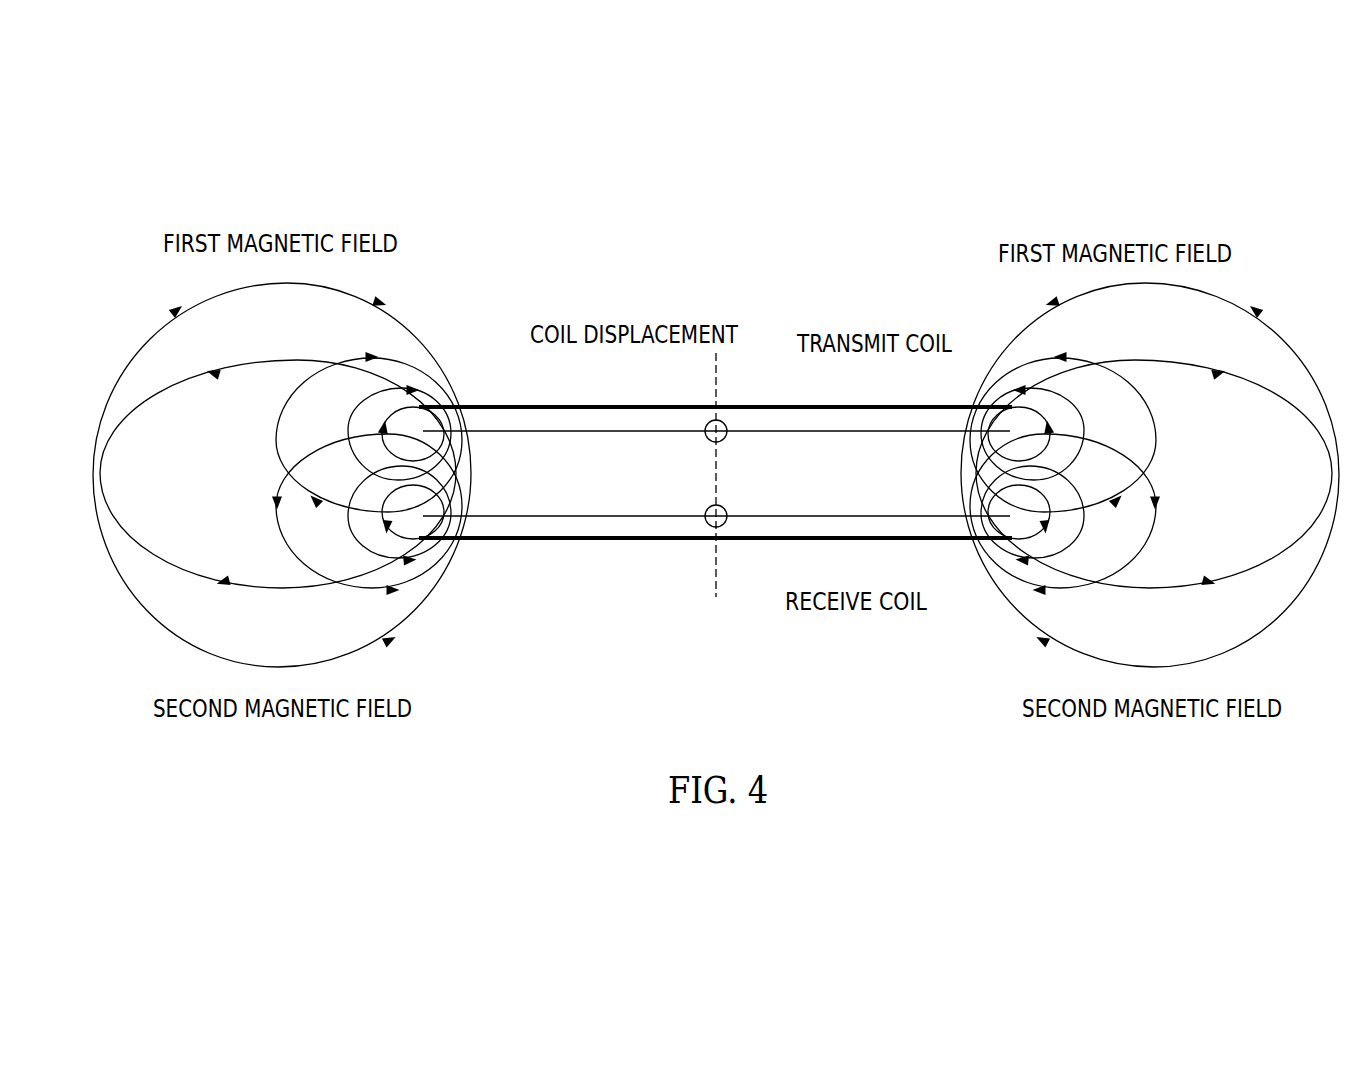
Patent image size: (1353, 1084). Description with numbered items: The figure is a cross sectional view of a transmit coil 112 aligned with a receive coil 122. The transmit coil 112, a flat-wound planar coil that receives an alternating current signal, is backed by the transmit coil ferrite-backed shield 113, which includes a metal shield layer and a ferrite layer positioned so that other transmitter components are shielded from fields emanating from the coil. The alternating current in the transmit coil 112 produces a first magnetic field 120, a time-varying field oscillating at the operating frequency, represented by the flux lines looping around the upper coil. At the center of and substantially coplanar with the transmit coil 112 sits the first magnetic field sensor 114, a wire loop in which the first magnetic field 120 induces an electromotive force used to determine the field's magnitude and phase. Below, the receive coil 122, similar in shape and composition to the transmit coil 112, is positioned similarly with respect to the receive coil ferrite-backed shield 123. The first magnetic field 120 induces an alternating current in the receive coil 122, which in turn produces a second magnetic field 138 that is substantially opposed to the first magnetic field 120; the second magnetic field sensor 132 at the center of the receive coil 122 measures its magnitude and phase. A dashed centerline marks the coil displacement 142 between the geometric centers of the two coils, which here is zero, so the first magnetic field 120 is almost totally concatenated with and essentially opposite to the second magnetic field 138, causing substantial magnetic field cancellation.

The transmit coil 112 is at (888, 430).
The transmit coil ferrite-backed shield 113 is at (556, 406).
The first magnetic field sensor 114 is at (707, 441).
The first magnetic field 120 is at (139, 283).
The receive coil 122 is at (846, 541).
The receive coil ferrite-backed shield 123 is at (575, 541).
The second magnetic field sensor 132 is at (708, 506).
The second magnetic field 138 is at (121, 670).
The coil displacement 142 is at (712, 371).